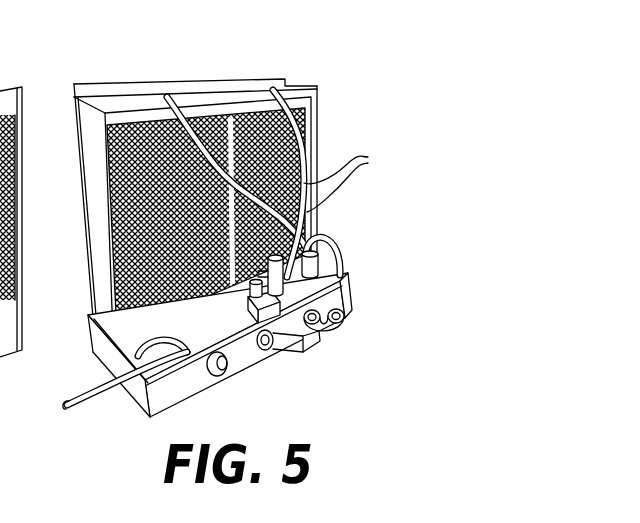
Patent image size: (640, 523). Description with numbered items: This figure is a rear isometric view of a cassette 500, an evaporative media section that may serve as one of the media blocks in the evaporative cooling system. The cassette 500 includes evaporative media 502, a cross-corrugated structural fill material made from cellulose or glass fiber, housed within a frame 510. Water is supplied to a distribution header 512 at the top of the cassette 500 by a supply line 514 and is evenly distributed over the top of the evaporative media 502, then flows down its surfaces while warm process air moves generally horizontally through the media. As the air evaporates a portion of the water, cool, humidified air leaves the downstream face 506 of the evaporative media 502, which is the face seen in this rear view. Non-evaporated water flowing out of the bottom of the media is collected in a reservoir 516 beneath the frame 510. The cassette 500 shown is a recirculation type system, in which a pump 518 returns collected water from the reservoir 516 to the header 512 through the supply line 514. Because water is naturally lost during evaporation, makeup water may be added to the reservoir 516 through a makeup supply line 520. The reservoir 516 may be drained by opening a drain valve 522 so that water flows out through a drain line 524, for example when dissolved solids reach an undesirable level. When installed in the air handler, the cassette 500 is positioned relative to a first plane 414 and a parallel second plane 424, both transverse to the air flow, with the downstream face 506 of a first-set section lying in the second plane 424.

The cassette 500 is at (216, 238).
The evaporative media 502 is at (128, 207).
The downstream face 506 is at (206, 221).
The frame 510 is at (87, 150).
The distribution header 512 is at (207, 93).
The supply line 514 is at (282, 183).
The reservoir 516 is at (190, 382).
The pump 518 is at (330, 267).
The makeup supply line 520 is at (143, 0).
The drain valve 522 is at (308, 350).
The drain line 524 is at (342, 327).
The first plane 414 is at (27, 0).
The second plane 424 is at (66, 0).